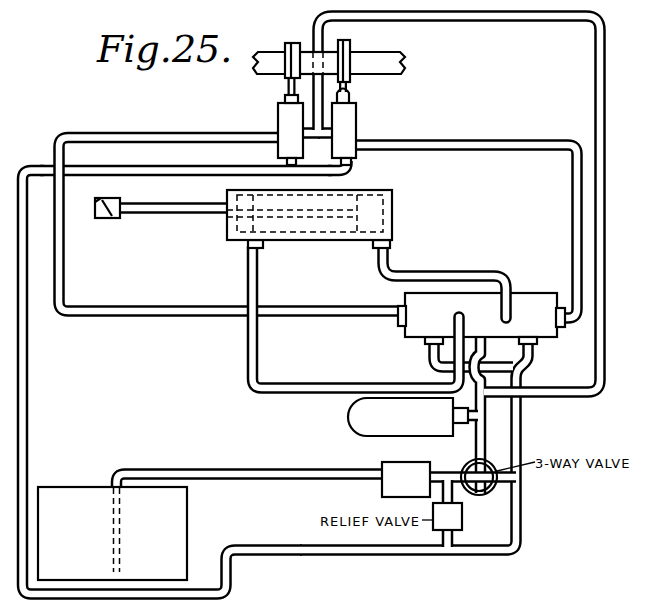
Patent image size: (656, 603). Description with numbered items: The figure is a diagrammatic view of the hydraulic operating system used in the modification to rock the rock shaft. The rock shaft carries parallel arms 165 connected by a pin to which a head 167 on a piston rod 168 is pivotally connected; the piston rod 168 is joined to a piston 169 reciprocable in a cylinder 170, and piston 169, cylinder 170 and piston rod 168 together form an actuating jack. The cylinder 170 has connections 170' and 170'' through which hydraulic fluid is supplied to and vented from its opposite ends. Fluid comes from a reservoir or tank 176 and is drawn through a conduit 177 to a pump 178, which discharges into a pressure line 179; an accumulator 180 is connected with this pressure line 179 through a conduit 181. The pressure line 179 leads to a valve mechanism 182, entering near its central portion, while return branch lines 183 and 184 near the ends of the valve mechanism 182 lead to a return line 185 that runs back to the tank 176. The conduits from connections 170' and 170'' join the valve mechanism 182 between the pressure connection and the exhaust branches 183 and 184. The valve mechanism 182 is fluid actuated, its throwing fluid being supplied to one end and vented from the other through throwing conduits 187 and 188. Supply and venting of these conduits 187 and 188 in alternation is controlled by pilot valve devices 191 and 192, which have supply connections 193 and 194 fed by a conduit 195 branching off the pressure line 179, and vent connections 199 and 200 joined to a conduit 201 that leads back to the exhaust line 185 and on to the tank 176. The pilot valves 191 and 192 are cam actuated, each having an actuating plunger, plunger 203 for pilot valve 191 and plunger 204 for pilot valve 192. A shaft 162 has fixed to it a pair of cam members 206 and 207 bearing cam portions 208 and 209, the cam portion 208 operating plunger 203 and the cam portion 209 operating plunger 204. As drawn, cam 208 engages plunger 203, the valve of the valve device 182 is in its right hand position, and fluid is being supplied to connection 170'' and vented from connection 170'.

The shaft 162 is at (267, 57).
The cam member 206 is at (288, 43).
The cam member 207 is at (349, 50).
The cam portion 208 is at (290, 92).
The actuating plunger 203 is at (286, 98).
The actuating plunger 204 is at (351, 95).
The cam portion 209 is at (352, 78).
The pilot valve device 191 is at (278, 117).
The pilot valve device 192 is at (357, 118).
The supply connection 193 is at (310, 130).
The supply connection 194 is at (330, 130).
The vent connection 199 is at (245, 168).
The vent connection 200 is at (348, 168).
The conduit 201 is at (23, 362).
The throwing conduit 187 is at (150, 134).
The throwing conduit 188 is at (494, 133).
The conduit 195 is at (510, 13).
The piston 169 is at (393, 206).
The cylinder 170 is at (309, 230).
The connection 170' is at (325, 314).
The connection 170'' is at (439, 279).
The parallel arm 165 is at (95, 205).
The head 167 is at (110, 213).
The piston rod 168 is at (175, 213).
The valve mechanism 182 is at (527, 293).
The branch line 183 is at (432, 353).
The branch line 184 is at (532, 353).
The accumulator 180 is at (348, 425).
The conduit 181 is at (462, 424).
The pressure line 179 is at (487, 455).
The pump 178 is at (393, 473).
The conduit 177 is at (253, 472).
The reservoir or tank 176 is at (72, 495).
The return line 185 is at (395, 550).